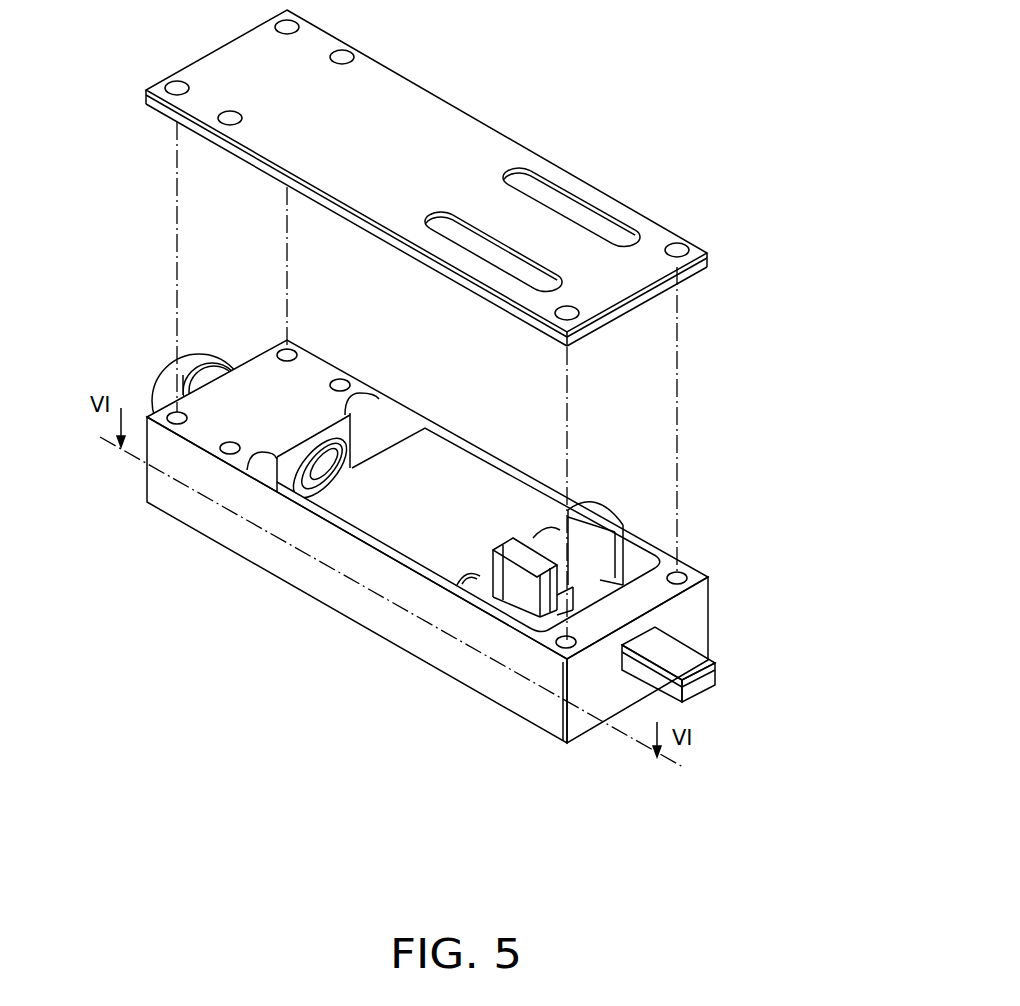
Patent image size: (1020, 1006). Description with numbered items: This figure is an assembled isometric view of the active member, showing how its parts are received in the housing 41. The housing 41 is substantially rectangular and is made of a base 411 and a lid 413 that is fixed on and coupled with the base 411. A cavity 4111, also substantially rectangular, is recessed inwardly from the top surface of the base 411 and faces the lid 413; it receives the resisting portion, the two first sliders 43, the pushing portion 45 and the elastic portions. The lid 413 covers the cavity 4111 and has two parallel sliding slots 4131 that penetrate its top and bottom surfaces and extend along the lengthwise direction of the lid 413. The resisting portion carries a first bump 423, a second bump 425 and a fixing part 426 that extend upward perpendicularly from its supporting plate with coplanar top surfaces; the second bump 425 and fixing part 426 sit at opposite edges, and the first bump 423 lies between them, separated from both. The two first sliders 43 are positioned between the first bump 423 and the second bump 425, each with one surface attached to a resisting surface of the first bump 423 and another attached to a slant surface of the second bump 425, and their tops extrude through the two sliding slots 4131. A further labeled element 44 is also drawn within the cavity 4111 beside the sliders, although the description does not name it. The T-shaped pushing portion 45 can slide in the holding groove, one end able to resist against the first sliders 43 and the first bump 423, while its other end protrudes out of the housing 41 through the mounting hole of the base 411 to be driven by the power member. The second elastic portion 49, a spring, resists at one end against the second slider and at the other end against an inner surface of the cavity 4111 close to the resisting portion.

The housing 41 is at (427, 549).
The base 411 is at (427, 463).
The cavity 4111 is at (373, 430).
The lid 413 is at (426, 178).
The sliding slot 4131 is at (578, 213).
The first slider 43 is at (593, 507).
The first bump 423 is at (567, 580).
The second bump 425 is at (533, 617).
The fixing part 426 is at (400, 533).
The elastic member 44 is at (490, 578).
The pushing portion 45 is at (700, 682).
The second elastic portion 49 is at (317, 478).